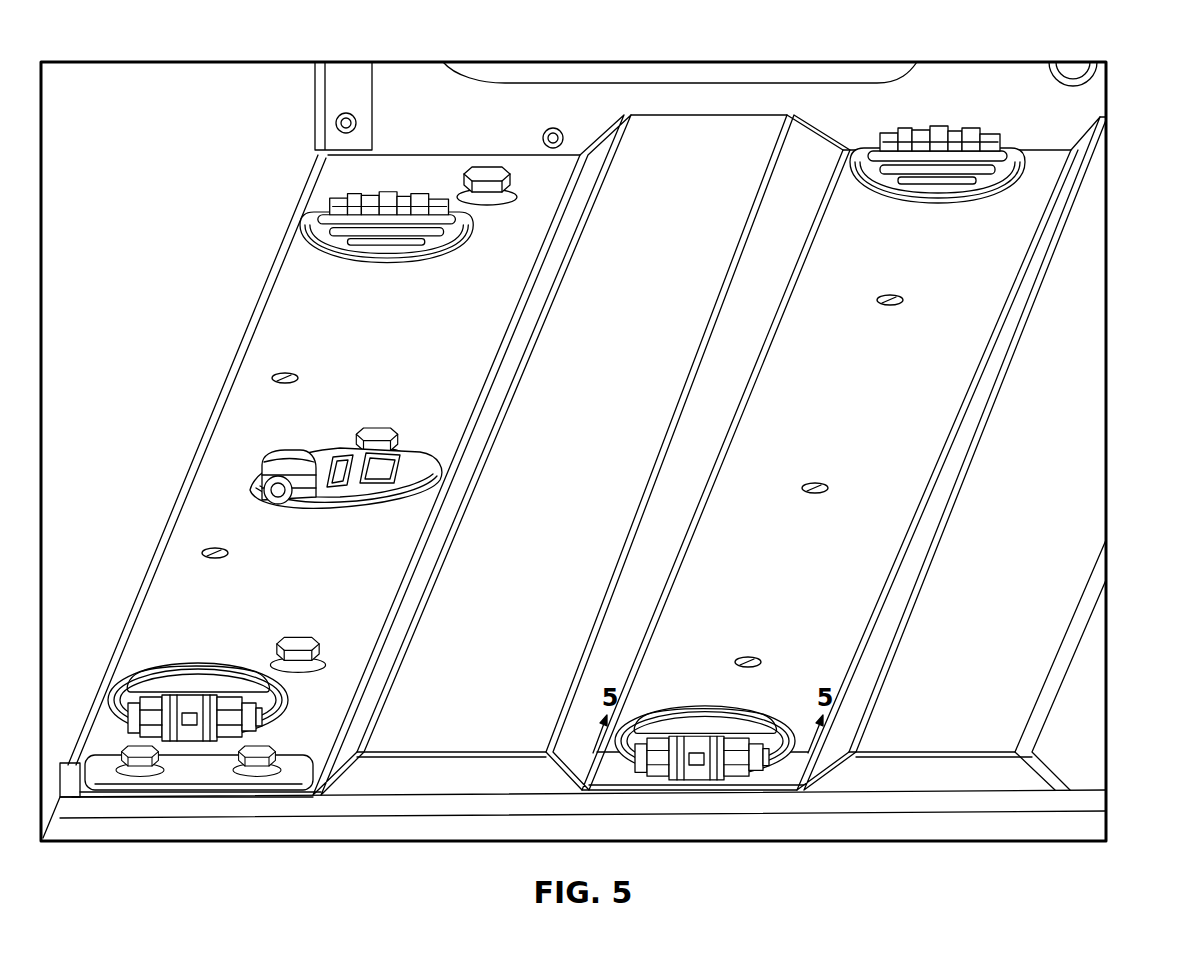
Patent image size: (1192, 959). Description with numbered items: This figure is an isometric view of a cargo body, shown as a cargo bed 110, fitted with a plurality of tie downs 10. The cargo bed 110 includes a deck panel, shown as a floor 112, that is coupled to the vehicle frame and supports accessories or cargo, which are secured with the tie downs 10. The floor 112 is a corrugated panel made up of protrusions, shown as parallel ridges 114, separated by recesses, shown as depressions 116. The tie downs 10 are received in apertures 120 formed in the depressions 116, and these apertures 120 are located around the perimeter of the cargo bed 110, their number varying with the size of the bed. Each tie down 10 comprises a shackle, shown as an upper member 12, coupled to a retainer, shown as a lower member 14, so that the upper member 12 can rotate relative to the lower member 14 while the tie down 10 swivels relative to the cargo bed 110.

The tie down 10 is at (566, 490).
The upper member 12 is at (385, 264).
The lower member 14 is at (410, 190).
The cargo bed 110 is at (612, 438).
The floor 112 is at (822, 157).
The ridges 114 is at (627, 187).
The depressions 116 is at (375, 362).
The apertures 120 is at (248, 492).